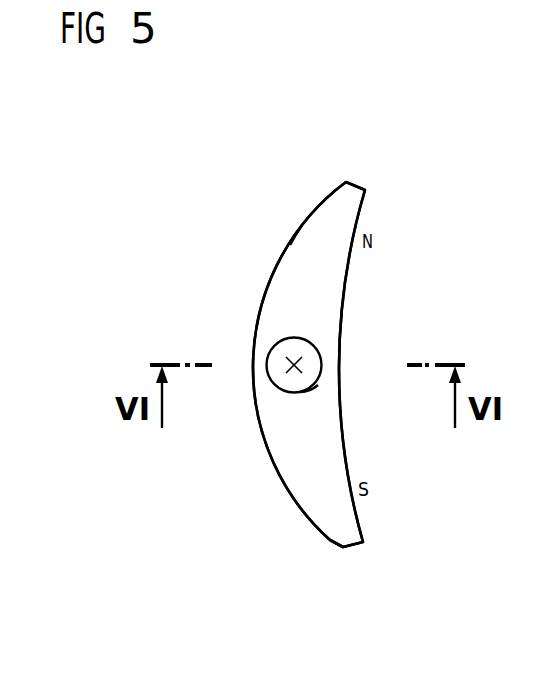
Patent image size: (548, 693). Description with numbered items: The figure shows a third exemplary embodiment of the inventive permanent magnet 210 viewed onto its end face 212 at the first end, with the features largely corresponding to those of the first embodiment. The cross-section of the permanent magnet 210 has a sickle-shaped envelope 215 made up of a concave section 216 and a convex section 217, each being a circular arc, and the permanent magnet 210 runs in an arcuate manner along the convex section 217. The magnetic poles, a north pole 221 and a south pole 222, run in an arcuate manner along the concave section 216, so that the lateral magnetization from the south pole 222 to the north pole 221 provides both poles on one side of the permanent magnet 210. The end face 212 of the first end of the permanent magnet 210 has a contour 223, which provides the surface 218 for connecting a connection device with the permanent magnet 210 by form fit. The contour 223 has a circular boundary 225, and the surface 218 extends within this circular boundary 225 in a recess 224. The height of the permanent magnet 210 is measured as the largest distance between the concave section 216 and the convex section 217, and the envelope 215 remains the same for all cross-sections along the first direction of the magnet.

The permanent magnet 210 is at (155, 264).
The end face 212 is at (310, 238).
The envelope 215 is at (320, 550).
The concave section 216 is at (342, 312).
The convex section 217 is at (275, 267).
The surface 218 is at (278, 378).
The north pole 221 is at (363, 210).
The south pole 222 is at (362, 520).
The contour 223 is at (284, 320).
The recess 224 is at (312, 355).
The circular boundary 225 is at (318, 385).